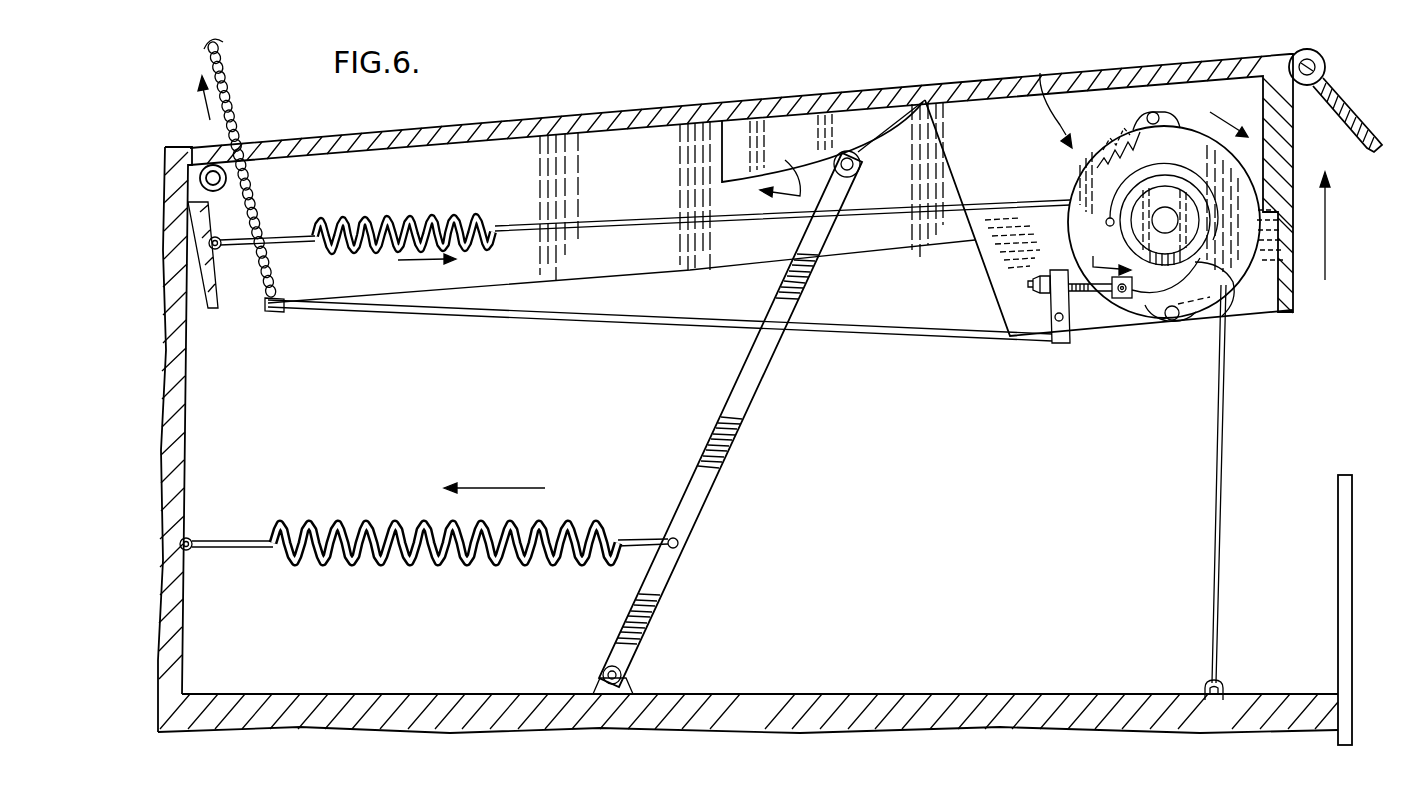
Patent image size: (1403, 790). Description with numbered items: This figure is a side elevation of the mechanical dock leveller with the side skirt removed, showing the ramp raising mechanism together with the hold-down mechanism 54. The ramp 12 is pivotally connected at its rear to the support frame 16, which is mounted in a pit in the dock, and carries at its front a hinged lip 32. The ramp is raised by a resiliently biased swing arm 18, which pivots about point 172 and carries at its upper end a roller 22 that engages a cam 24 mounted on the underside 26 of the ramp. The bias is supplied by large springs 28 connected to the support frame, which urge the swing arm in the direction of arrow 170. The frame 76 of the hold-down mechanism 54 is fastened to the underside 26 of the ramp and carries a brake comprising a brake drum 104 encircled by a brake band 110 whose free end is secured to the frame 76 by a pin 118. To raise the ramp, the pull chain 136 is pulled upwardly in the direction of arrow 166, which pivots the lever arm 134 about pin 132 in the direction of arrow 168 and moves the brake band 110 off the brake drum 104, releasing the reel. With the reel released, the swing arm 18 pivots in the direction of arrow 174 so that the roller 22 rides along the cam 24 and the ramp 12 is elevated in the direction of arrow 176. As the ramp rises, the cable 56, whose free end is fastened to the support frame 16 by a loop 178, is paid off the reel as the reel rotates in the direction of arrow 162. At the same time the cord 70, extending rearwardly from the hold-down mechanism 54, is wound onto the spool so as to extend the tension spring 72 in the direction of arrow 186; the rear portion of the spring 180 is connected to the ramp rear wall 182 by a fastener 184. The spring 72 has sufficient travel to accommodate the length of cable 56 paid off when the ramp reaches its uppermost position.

The ramp 12 is at (648, 110).
The support frame 16 is at (1272, 702).
The swing arm 18 is at (725, 442).
The roller 22 is at (862, 168).
The cam 24 is at (748, 125).
The underside of the ramp 26 is at (975, 94).
The springs 28 is at (428, 570).
The lip 32 is at (1347, 100).
The hold-down mechanism 54 is at (992, 154).
The cable 56 is at (1226, 428).
The cord 70 is at (604, 232).
The spring 72 is at (430, 178).
The frame 76 is at (1023, 181).
The brake drum 104 is at (1163, 190).
The brake band 110 is at (1233, 290).
The pin 118 is at (1106, 223).
The pin 132 is at (1058, 345).
The lever arm 134 is at (648, 324).
The pull chain 136 is at (236, 94).
The arrow 162 is at (1219, 110).
The arrow 166 is at (198, 110).
The arrow 168 is at (1104, 254).
The arrow 170 is at (498, 479).
The point 172 is at (630, 676).
The arrow 174 is at (783, 167).
The arrow 176 is at (1335, 242).
The loop 178 is at (1203, 688).
The rear portion of the spring 180 is at (247, 250).
The ramp rear wall 182 is at (212, 225).
The fastener 184 is at (220, 252).
The arrow 186 is at (405, 269).